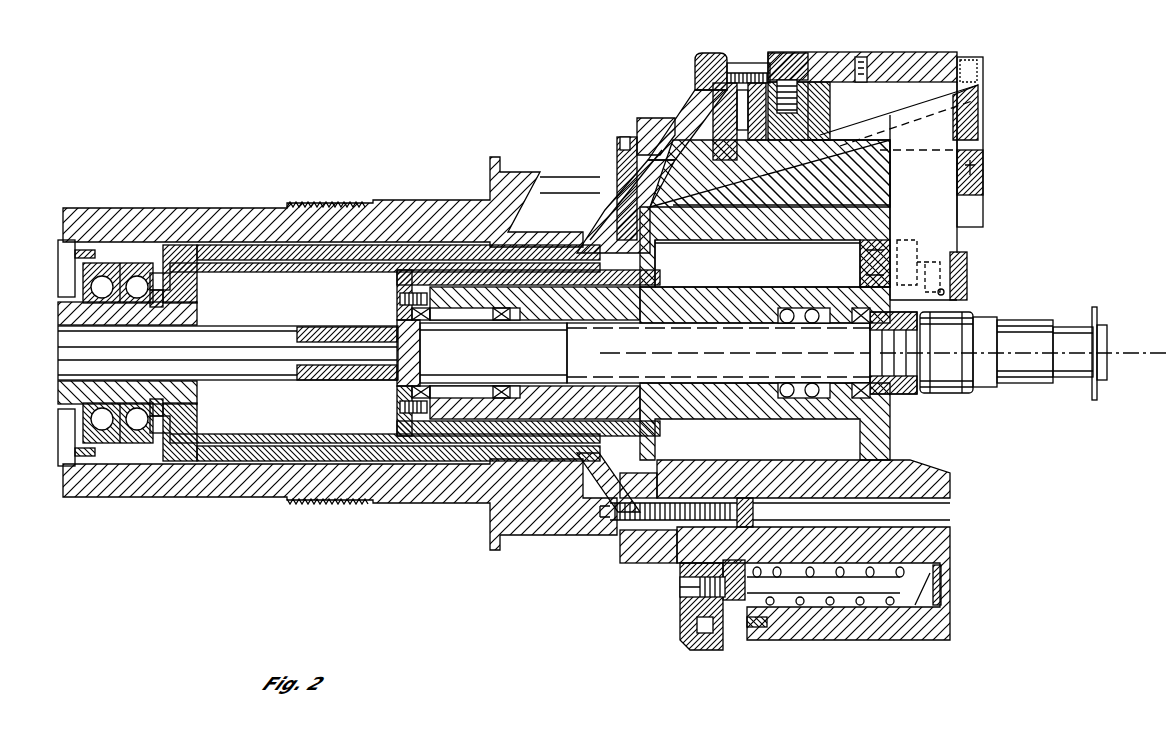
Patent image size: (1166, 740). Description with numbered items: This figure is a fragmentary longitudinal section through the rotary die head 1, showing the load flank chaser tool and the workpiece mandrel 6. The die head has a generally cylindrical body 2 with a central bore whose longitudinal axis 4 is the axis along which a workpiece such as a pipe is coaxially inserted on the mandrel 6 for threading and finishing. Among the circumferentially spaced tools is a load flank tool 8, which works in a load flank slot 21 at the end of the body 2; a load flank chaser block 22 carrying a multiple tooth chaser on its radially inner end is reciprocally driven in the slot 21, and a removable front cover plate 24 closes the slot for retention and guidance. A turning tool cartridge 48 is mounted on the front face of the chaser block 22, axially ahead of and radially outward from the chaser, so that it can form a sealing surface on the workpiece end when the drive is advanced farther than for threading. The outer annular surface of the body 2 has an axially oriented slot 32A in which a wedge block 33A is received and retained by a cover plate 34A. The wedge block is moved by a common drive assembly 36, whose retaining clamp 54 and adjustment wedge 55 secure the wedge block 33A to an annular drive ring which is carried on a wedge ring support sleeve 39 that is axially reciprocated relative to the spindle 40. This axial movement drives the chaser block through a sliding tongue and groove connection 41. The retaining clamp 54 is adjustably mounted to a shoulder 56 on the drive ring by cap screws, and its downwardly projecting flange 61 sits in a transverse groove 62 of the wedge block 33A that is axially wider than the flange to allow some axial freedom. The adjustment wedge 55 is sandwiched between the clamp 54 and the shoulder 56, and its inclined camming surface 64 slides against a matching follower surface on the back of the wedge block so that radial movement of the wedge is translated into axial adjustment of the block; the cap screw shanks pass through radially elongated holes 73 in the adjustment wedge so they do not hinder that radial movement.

The rotary die head 1 is at (672, 102).
The body 2 is at (782, 228).
The longitudinal axis 4 is at (1130, 346).
The mandrel 6 is at (958, 394).
The load flank tool 8 is at (964, 228).
The load flank slot 21 is at (890, 172).
The load flank chaser block 22 is at (912, 209).
The front cover plate 24 is at (968, 190).
The slot 32A is at (765, 213).
The wedge block 33A is at (878, 112).
The cover plate 34A is at (905, 55).
The drive assembly 36 is at (622, 126).
The wedge ring support sleeve 39 is at (620, 196).
The spindle 40 is at (470, 497).
The tongue and groove connection 41 is at (948, 111).
The turning tool cartridge 48 is at (964, 298).
The retaining clamp 54 is at (790, 53).
The adjustment wedge 55 is at (722, 118).
The shoulder 56 is at (710, 53).
The flange 61 is at (750, 94).
The transverse groove 62 is at (776, 90).
The inclined camming surface 64 is at (740, 100).
The radially elongated hole 73 is at (745, 63).